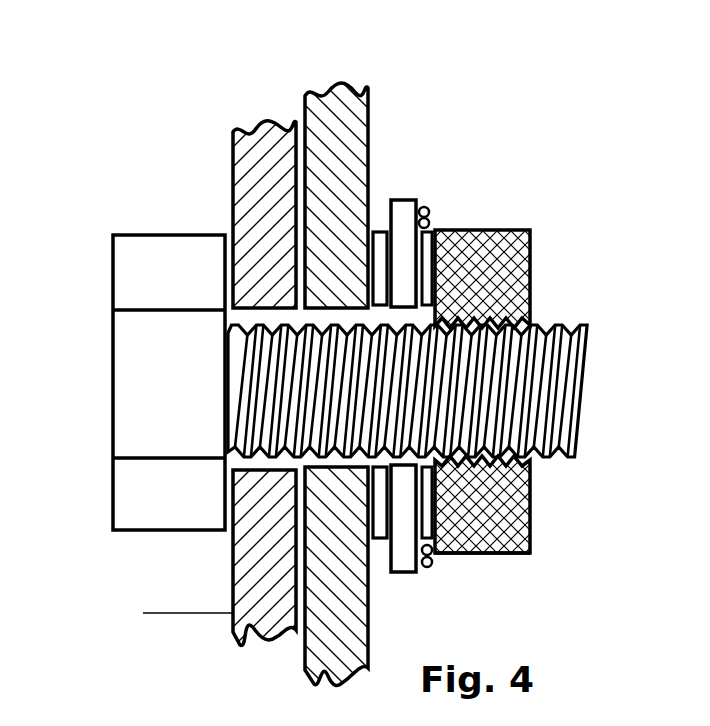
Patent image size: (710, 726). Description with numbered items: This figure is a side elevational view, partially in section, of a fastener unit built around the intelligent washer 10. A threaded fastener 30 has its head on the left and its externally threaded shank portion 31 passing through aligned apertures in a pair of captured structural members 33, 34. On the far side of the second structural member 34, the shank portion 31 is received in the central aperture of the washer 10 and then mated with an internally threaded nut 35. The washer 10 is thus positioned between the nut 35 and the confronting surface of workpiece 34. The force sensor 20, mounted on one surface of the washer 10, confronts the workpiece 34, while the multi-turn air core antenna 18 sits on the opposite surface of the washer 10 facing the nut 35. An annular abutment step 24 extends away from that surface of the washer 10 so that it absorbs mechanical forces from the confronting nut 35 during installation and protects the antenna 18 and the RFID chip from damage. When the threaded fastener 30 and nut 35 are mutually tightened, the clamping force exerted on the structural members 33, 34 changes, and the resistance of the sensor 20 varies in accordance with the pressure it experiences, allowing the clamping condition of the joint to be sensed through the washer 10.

The washer 10 is at (410, 195).
The multi-turn air core antenna 18 is at (430, 567).
The force sensor 20 is at (383, 222).
The annular abutment step 24 is at (480, 553).
The threaded fastener 30 is at (128, 229).
The externally threaded shank portion 31 is at (565, 330).
The captured structural member 33 is at (254, 158).
The captured structural member 34 is at (327, 120).
The internally threaded nut 35 is at (458, 258).